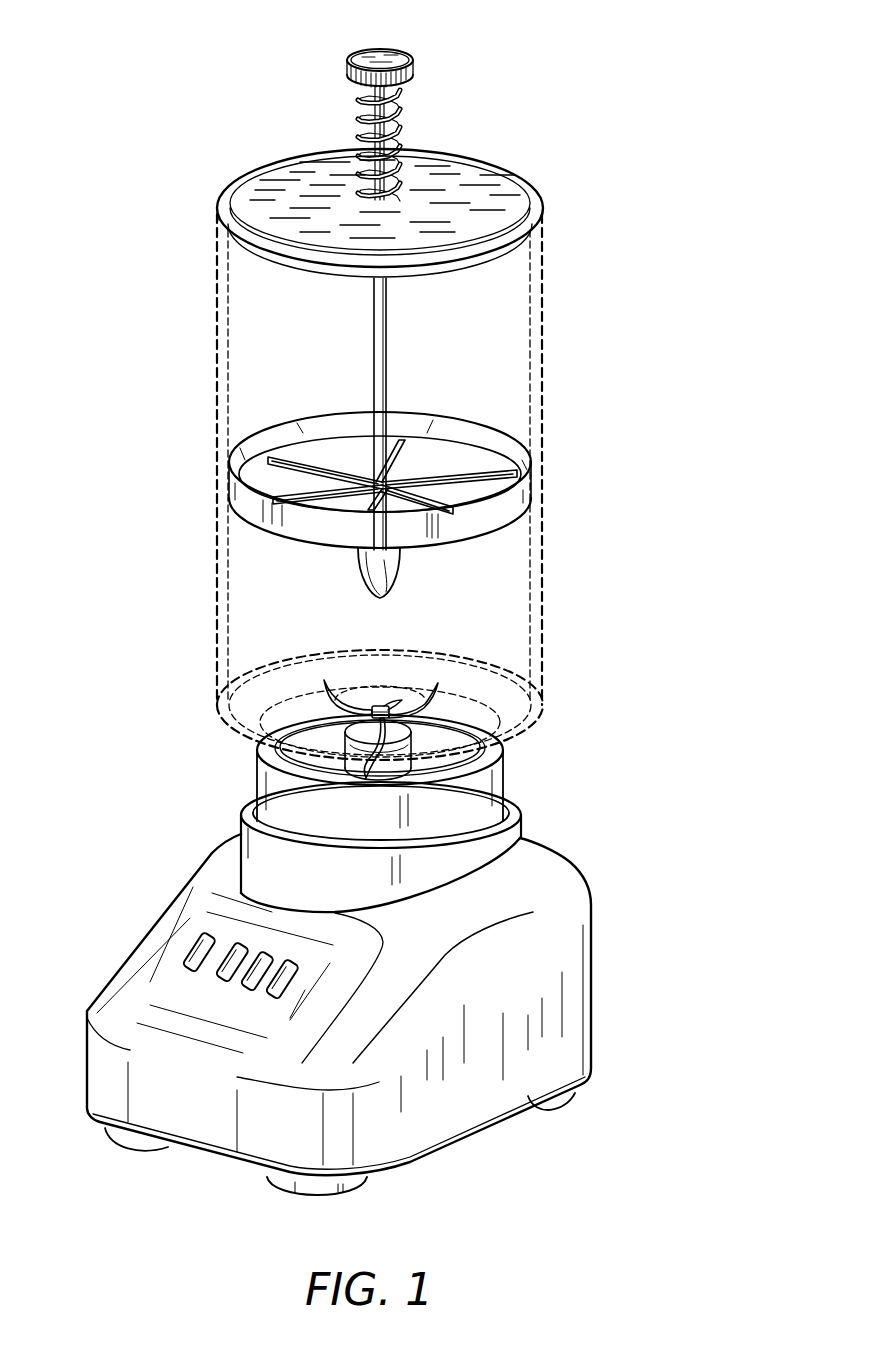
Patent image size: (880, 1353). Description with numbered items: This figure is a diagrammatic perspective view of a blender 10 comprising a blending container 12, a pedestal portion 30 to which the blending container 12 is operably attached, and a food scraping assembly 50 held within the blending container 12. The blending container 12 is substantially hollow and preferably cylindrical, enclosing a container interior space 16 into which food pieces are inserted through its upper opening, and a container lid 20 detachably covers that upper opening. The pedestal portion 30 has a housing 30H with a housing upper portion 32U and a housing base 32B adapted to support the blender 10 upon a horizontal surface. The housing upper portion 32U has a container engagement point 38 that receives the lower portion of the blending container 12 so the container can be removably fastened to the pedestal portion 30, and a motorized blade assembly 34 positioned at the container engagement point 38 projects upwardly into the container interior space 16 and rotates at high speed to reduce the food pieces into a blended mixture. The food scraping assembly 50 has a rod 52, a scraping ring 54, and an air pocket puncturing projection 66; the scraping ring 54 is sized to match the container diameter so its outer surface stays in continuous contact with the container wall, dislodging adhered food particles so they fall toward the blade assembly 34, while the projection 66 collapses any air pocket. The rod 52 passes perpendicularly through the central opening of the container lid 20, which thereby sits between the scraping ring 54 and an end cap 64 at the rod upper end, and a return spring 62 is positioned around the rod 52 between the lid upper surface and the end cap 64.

The blender 10 is at (650, 1112).
The blending container 12 is at (545, 420).
The container interior space 16 is at (221, 605).
The container lid 20 is at (512, 212).
The pedestal portion 30 is at (591, 900).
The housing 30H is at (538, 966).
The housing upper portion 32U is at (490, 848).
The housing base 32B is at (548, 1108).
The blade assembly 34 is at (436, 682).
The container engagement point 38 is at (447, 727).
The food scraping assembly 50 is at (478, 420).
The rod 52 is at (387, 345).
The scraping ring 54 is at (505, 505).
The return spring 62 is at (402, 120).
The end cap 64 is at (410, 56).
The air pocket puncturing projection 66 is at (389, 600).